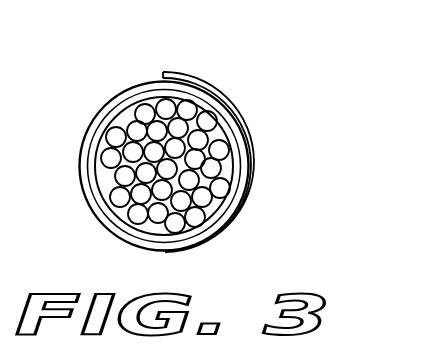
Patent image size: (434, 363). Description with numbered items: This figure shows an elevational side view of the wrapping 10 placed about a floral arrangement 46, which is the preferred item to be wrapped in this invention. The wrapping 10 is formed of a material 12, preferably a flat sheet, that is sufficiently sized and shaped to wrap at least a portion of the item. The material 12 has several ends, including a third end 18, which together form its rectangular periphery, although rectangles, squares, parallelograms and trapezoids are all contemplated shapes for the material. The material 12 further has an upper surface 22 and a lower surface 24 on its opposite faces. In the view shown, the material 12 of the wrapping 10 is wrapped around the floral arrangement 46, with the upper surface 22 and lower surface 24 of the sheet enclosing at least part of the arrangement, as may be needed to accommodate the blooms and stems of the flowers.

The wrapping 10 is at (201, 143).
The material 12 is at (254, 153).
The third end 18 is at (245, 177).
The upper surface 22 is at (165, 101).
The lower surface 24 is at (188, 74).
The floral arrangement 46 is at (223, 102).